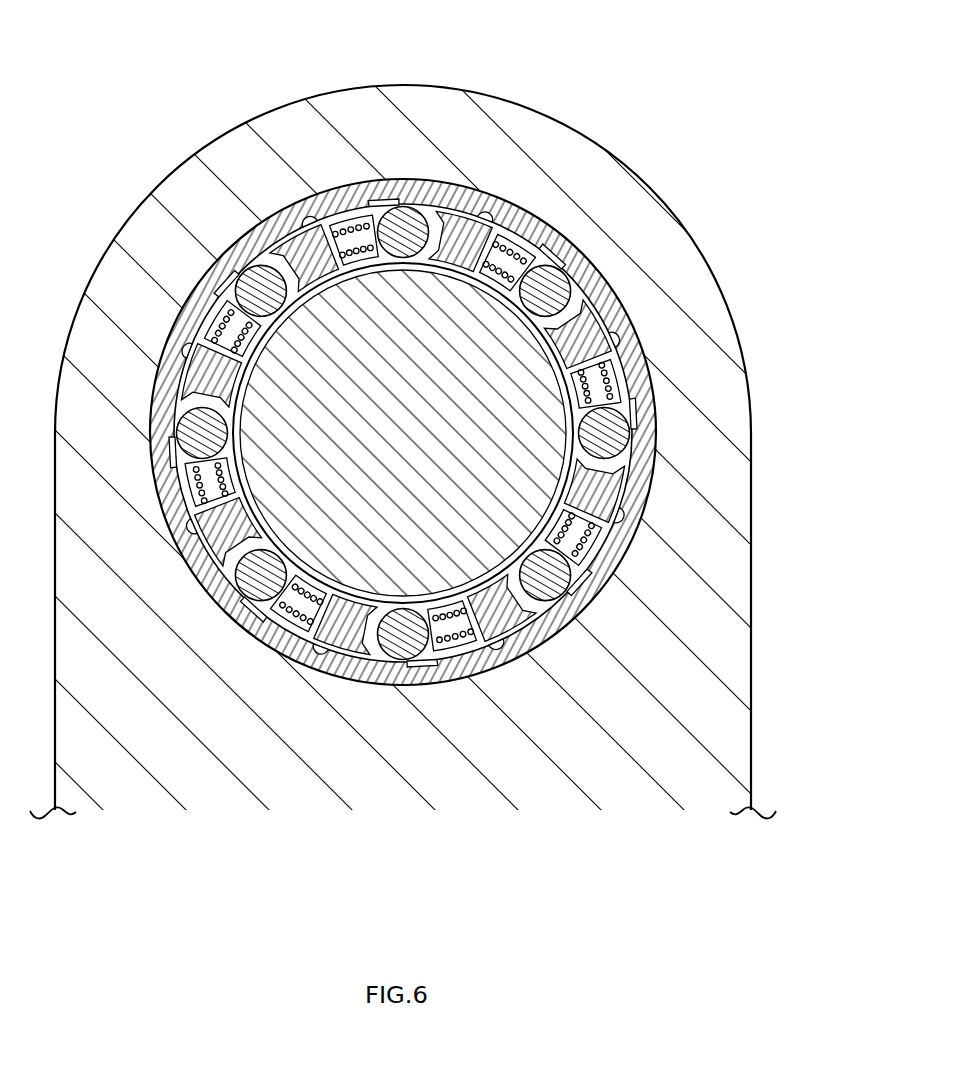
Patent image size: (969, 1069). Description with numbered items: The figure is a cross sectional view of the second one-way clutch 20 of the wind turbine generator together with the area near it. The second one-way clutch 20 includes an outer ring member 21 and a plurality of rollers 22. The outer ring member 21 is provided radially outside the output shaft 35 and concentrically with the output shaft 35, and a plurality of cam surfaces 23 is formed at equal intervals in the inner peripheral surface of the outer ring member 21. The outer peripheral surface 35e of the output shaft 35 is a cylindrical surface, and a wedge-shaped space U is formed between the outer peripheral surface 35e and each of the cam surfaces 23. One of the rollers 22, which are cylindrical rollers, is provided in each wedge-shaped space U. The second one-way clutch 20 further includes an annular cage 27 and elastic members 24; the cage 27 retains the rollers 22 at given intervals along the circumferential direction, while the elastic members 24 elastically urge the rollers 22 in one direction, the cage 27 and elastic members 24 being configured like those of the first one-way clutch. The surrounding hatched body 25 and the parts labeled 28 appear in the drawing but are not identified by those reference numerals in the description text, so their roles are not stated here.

The second one-way clutch 20 is at (647, 320).
The outer ring member 21 is at (338, 182).
The rollers 22 is at (407, 207).
The cam surfaces 23 is at (468, 222).
The elastic members 24 is at (362, 220).
The housing 25 is at (657, 223).
The cage 27 is at (305, 242).
The coil spring 28 is at (343, 240).
The output shaft 35 is at (355, 575).
The outer peripheral surface 35e is at (432, 258).
The wedge-shaped space U is at (478, 351).